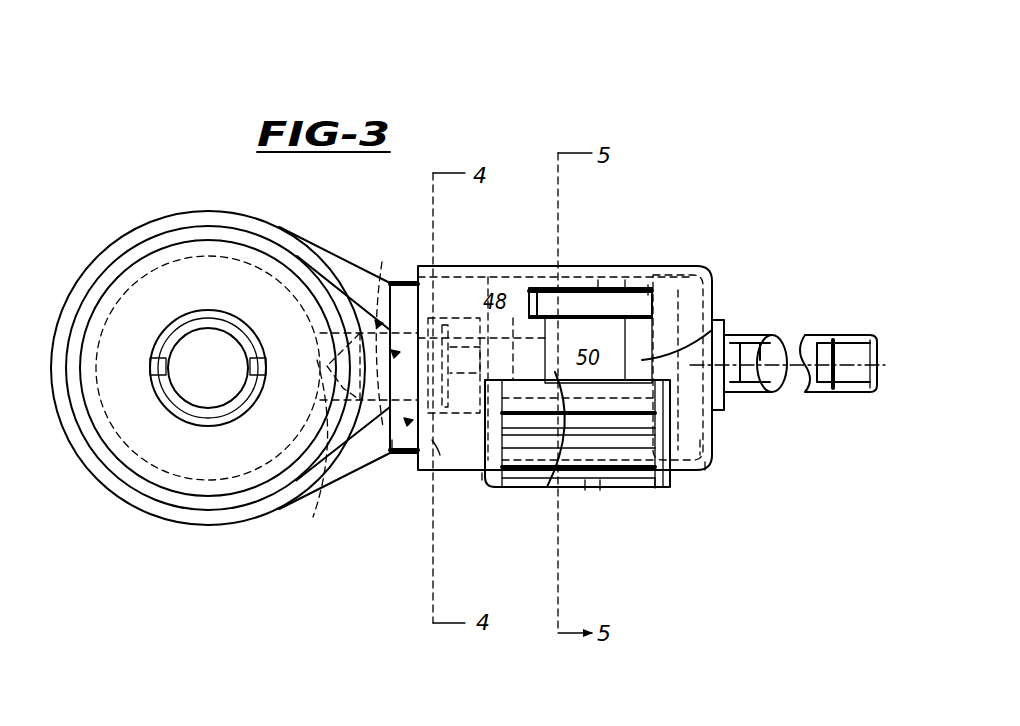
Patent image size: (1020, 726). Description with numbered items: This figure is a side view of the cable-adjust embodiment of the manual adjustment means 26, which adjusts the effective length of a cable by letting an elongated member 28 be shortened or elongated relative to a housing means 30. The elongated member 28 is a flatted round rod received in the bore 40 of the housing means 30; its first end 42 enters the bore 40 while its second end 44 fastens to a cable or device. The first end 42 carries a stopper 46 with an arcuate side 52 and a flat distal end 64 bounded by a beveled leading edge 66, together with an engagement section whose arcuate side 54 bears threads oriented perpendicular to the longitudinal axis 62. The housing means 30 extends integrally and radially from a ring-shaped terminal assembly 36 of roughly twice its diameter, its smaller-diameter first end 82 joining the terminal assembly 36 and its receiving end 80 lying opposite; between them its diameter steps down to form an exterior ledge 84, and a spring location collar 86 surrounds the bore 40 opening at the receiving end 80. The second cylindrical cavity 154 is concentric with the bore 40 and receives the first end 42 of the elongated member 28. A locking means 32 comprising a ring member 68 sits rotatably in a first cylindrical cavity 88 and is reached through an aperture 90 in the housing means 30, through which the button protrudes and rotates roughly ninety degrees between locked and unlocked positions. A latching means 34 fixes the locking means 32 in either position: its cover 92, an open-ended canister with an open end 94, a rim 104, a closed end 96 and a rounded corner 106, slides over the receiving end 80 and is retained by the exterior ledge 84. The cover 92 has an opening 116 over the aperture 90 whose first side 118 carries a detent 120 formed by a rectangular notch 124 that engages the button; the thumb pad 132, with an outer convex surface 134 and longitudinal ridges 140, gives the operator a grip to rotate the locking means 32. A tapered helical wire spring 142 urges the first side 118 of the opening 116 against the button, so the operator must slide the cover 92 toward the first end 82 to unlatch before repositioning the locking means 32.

The adjustment means 26 is at (173, 210).
The elongated member 28 is at (866, 336).
The housing means 30 is at (398, 462).
The locking means 32 is at (570, 500).
The latching means 34 is at (712, 266).
The terminal assembly 36 is at (160, 522).
The bore 40 is at (316, 339).
The first end 42 is at (382, 270).
The second end 44 is at (870, 393).
The stopper 46 is at (446, 272).
The arcuate side 52 is at (598, 282).
The arcuate side 54 is at (600, 490).
The longitudinal axis 62 is at (823, 397).
The distal end 64 is at (327, 399).
The beveled circumferential leading edge 66 is at (440, 456).
The ring member 68 is at (625, 282).
The receiving end 80 is at (718, 285).
The first end 82 is at (320, 500).
The exterior ledge 84 is at (492, 272).
The spring location collar 86 is at (712, 455).
The first internal cylindrical cavity 88 is at (648, 286).
The aperture 90 is at (585, 290).
The cover 92 is at (724, 421).
The open end 94 is at (405, 281).
The closed end 96 is at (716, 318).
The rim 104 is at (412, 462).
The rounded circumferential corner 106 is at (714, 462).
The opening 116 is at (712, 330).
The first side 118 is at (547, 488).
The detent 120 is at (547, 275).
The rectangular notch 124 is at (548, 290).
The thumb pad 132 is at (655, 488).
The outer convex surface 134 is at (585, 490).
The longitudinal ridges 140 is at (680, 470).
The helical wire spring 142 is at (718, 300).
The second cylindrical cavity 154 is at (482, 481).